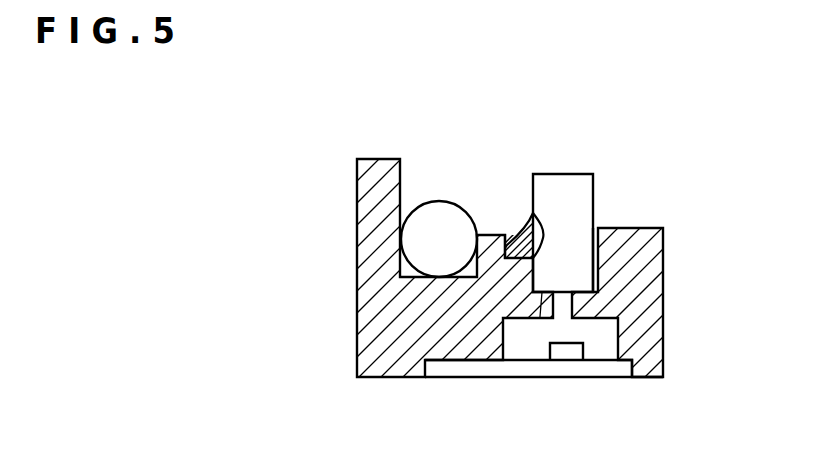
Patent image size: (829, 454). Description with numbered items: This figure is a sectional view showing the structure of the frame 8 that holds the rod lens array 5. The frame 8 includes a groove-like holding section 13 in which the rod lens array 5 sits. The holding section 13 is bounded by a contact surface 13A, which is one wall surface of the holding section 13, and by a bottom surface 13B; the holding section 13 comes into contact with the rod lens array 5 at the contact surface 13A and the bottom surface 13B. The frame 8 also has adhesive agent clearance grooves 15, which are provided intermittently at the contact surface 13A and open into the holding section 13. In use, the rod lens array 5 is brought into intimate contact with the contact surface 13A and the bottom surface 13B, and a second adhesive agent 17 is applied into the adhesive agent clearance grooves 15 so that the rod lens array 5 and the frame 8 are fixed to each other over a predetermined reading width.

The rod lens array 5 is at (563, 174).
The frame 8 is at (357, 268).
The holding section 13 is at (595, 228).
The contact surface 13A is at (533, 220).
The bottom surface 13B is at (595, 269).
The adhesive agent clearance groove 15 is at (503, 230).
The second adhesive agent 17 is at (525, 232).